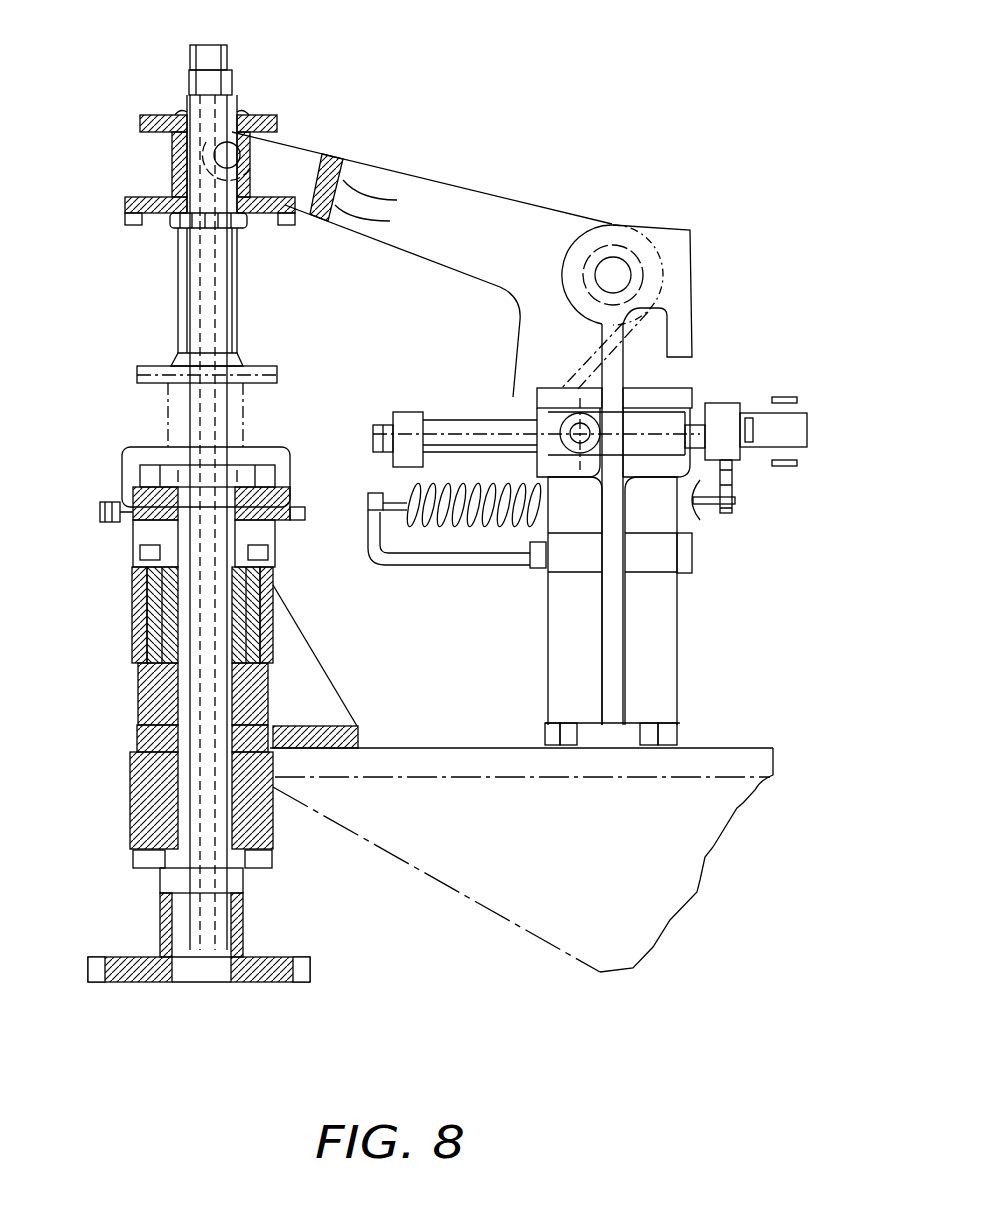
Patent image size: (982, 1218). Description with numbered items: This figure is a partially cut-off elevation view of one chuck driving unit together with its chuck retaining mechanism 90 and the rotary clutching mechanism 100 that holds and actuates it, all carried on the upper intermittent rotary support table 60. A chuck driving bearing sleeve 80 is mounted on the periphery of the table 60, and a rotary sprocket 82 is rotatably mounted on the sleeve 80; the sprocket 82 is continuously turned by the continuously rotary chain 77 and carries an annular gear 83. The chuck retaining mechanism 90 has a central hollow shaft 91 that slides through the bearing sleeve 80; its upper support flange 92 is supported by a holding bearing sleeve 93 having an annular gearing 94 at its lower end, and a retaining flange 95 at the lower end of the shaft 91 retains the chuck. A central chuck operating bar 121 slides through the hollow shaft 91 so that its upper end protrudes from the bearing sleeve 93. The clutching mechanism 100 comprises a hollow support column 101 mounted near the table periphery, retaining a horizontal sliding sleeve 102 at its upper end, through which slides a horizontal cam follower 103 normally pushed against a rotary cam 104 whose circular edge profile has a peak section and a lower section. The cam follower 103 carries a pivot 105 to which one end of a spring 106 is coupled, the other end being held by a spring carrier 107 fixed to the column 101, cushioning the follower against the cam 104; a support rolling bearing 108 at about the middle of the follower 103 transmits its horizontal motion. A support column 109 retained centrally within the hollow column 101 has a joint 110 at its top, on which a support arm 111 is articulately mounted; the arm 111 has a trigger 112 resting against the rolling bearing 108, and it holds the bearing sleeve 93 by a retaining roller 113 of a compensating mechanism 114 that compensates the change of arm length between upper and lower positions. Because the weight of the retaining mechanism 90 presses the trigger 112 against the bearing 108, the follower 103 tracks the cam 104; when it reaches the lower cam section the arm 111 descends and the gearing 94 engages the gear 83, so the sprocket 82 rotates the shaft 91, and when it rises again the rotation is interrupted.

The upper intermittent rotary support table 60 is at (450, 755).
The continuously rotary chain 77 is at (100, 514).
The chuck driving bearing sleeve 80 is at (133, 630).
The rotary sprocket 82 is at (292, 500).
The annular gear 83 is at (123, 470).
The chuck retaining mechanism 90 is at (422, 264).
The central hollow shaft 91 is at (238, 302).
The upper support flange 92 is at (237, 107).
The holding bearing sleeve 93 is at (172, 168).
The annular gearing 94 is at (125, 232).
The retaining flange 95 is at (312, 972).
The rotary chuck clutching mechanism 100 is at (672, 611).
The hollow support column 101 is at (680, 703).
The horizontal sliding sleeve 102 is at (690, 392).
The horizontal cam follower 103 is at (440, 410).
The rotary cam 104 is at (808, 430).
The pivot 105 is at (735, 512).
The spring 106 is at (480, 530).
The spring carrier 107 is at (368, 535).
The support rolling bearing 108 is at (515, 400).
The support column 109 is at (620, 673).
The joint 110 is at (640, 232).
The support arm 111 is at (566, 212).
The trigger 112 is at (520, 322).
The retaining roller 113 is at (272, 157).
The compensating mechanism 114 is at (353, 185).
The central chuck operating bar 121 is at (215, 45).